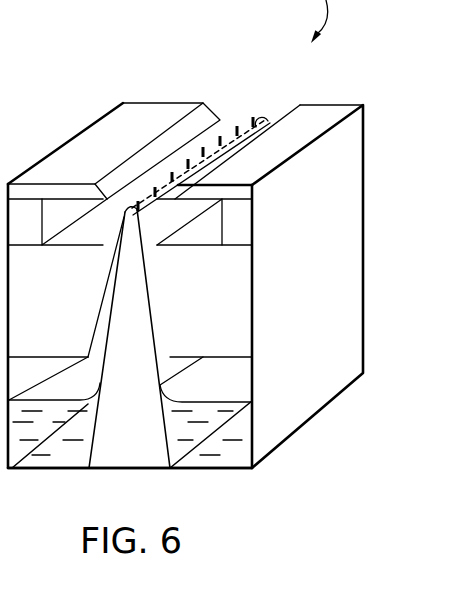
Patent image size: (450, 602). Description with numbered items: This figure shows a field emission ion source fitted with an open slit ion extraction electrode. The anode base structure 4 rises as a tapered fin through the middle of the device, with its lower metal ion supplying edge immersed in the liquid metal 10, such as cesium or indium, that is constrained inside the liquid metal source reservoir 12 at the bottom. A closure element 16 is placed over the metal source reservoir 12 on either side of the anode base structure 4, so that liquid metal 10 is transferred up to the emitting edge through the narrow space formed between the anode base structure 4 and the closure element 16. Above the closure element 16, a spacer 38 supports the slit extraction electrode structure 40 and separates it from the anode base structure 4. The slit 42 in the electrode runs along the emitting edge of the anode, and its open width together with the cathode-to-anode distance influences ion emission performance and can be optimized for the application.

The anode base structure 4 is at (138, 314).
The liquid metal 10 is at (235, 430).
The liquid metal source reservoir 12 is at (239, 462).
The closure element 16 is at (64, 313).
The spacer 38 is at (240, 220).
The slit extraction electrode structure 40 is at (111, 158).
The slit 42 is at (240, 108).